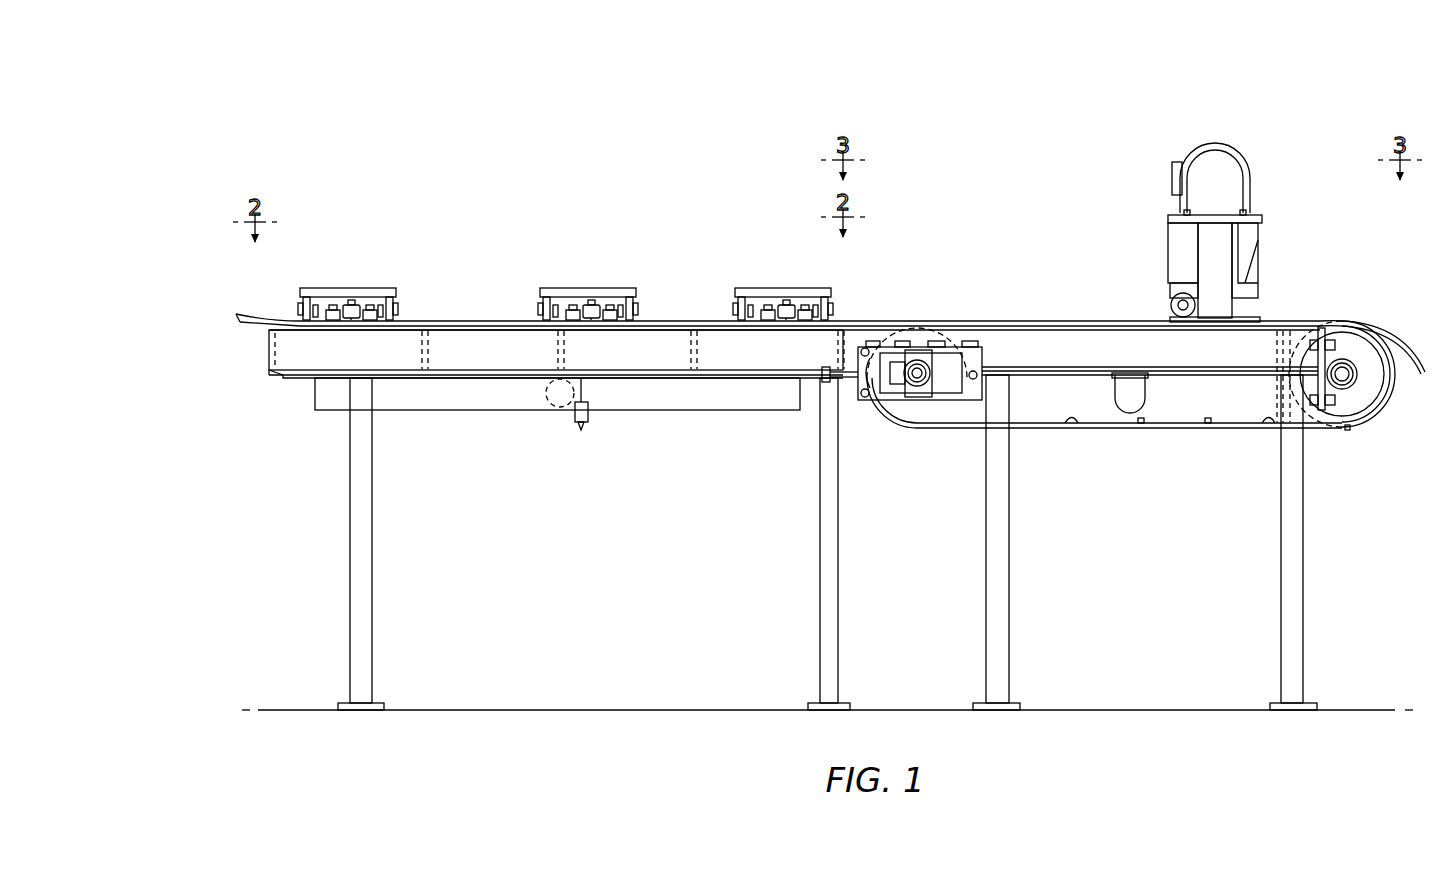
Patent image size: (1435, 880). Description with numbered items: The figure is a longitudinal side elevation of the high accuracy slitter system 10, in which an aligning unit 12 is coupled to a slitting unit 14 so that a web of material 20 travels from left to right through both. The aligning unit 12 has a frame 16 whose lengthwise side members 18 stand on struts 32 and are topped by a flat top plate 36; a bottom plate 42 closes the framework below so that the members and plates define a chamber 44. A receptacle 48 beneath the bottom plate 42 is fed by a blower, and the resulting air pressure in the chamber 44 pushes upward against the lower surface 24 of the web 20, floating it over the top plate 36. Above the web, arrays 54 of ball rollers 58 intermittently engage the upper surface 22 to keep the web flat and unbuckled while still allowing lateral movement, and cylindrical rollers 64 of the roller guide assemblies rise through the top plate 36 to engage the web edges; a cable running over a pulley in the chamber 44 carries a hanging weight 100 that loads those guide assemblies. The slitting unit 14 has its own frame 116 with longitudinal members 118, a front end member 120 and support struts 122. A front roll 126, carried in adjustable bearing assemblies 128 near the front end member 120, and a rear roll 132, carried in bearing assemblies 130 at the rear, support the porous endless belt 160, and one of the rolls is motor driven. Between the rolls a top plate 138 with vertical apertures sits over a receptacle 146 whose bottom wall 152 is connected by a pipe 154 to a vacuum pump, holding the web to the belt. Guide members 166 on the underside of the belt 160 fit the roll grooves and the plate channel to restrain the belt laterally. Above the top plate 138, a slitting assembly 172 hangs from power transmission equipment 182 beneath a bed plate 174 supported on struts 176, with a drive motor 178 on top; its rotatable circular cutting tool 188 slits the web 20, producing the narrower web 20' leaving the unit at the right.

The high accuracy slitter system 10 is at (825, 414).
The aligning unit 12 is at (495, 272).
The slitting unit 14 is at (1020, 272).
The frame 16 is at (542, 451).
The side members 18 is at (318, 352).
The web of material 20 is at (539, 298).
The web portion 20' is at (1372, 324).
The upper surface 22 is at (285, 320).
The lower surface 24 is at (252, 328).
The struts 32 is at (350, 560).
The top plate 36 is at (478, 320).
The bottom plate 42 is at (296, 379).
The chamber 44 is at (521, 347).
The receptacle 48 is at (657, 400).
The arrays of ball rollers 54 is at (565, 293).
The ball rollers 58 is at (352, 318).
The cylindrical rollers 64 is at (348, 303).
The weight 100 is at (578, 420).
The frame 116 is at (1100, 414).
The longitudinal members 118 is at (1055, 357).
The front end member 120 is at (860, 340).
The support struts 122 is at (998, 547).
The front roll 126 is at (898, 412).
The adjustable bearing assemblies 128 is at (917, 388).
The bearing assemblies 130 is at (1348, 390).
The rear roll 132 is at (1382, 400).
The top plate 138 is at (1300, 330).
The receptacle 146 is at (1165, 378).
The bottom wall 152 is at (1228, 376).
The pipe 154 is at (1140, 405).
The endless belt 160 is at (1107, 429).
The guide members 166 is at (1068, 423).
The slitting assembly 172 is at (1202, 220).
The bed plate 174 is at (1248, 218).
The struts 176 is at (1212, 245).
The drive motor 178 is at (1220, 143).
The power transmission equipment 182 is at (1182, 236).
The cutting tool 188 is at (1170, 302).